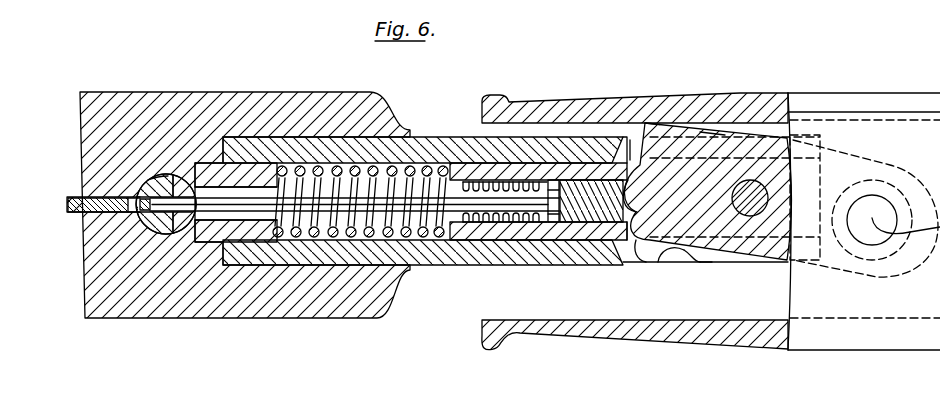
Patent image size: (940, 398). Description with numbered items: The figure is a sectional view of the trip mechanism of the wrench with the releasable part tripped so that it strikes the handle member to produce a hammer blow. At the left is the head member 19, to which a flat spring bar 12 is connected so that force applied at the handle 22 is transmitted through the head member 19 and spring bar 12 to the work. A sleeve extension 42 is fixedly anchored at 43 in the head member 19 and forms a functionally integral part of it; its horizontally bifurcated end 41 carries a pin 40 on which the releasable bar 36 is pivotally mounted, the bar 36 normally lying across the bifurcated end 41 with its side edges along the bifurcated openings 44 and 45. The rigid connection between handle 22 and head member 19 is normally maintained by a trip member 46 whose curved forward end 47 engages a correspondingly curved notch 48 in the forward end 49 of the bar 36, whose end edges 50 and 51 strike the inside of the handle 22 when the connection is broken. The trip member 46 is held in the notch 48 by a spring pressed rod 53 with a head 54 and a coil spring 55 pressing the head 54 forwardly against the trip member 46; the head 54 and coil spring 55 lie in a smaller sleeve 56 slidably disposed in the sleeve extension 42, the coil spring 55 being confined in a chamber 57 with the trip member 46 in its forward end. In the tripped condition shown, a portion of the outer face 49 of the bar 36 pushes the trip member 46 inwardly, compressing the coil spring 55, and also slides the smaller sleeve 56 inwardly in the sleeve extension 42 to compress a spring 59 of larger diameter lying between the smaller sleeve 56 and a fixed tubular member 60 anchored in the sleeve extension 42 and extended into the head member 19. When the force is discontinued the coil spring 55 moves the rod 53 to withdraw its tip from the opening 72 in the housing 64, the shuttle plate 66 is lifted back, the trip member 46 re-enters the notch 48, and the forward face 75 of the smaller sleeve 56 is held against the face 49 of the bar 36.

The head member 19 is at (109, 94).
The shuttle plate 66 is at (170, 174).
The housing 64 is at (148, 180).
The flat spring bar 12 is at (72, 198).
The opening 72 is at (140, 212).
The fixed tubular member 60 is at (253, 233).
The anchorage of sleeve extension 43 is at (263, 137).
The sleeve extension 42 is at (322, 148).
The smaller sleeve 56 is at (518, 165).
The spring of larger diameter 59 is at (438, 232).
The spring pressed rod 53 is at (428, 200).
The coil spring 55 is at (473, 214).
The head of rod 54 is at (551, 226).
The chamber 57 is at (558, 182).
The forward face of sleeve 75 is at (598, 138).
The forward end of bar 49 is at (648, 126).
The bifurcated opening 44 is at (630, 140).
The end edge 50 is at (646, 123).
The releasable bar 36 is at (712, 136).
The trip member 46 is at (597, 212).
The curved forward end 47 is at (628, 236).
The end edge 51 is at (666, 262).
The bifurcated opening 45 is at (657, 241).
The notch 48 is at (700, 259).
The pin 40 is at (752, 216).
The bifurcated end 41 is at (790, 110).
The handle 22 is at (911, 101).